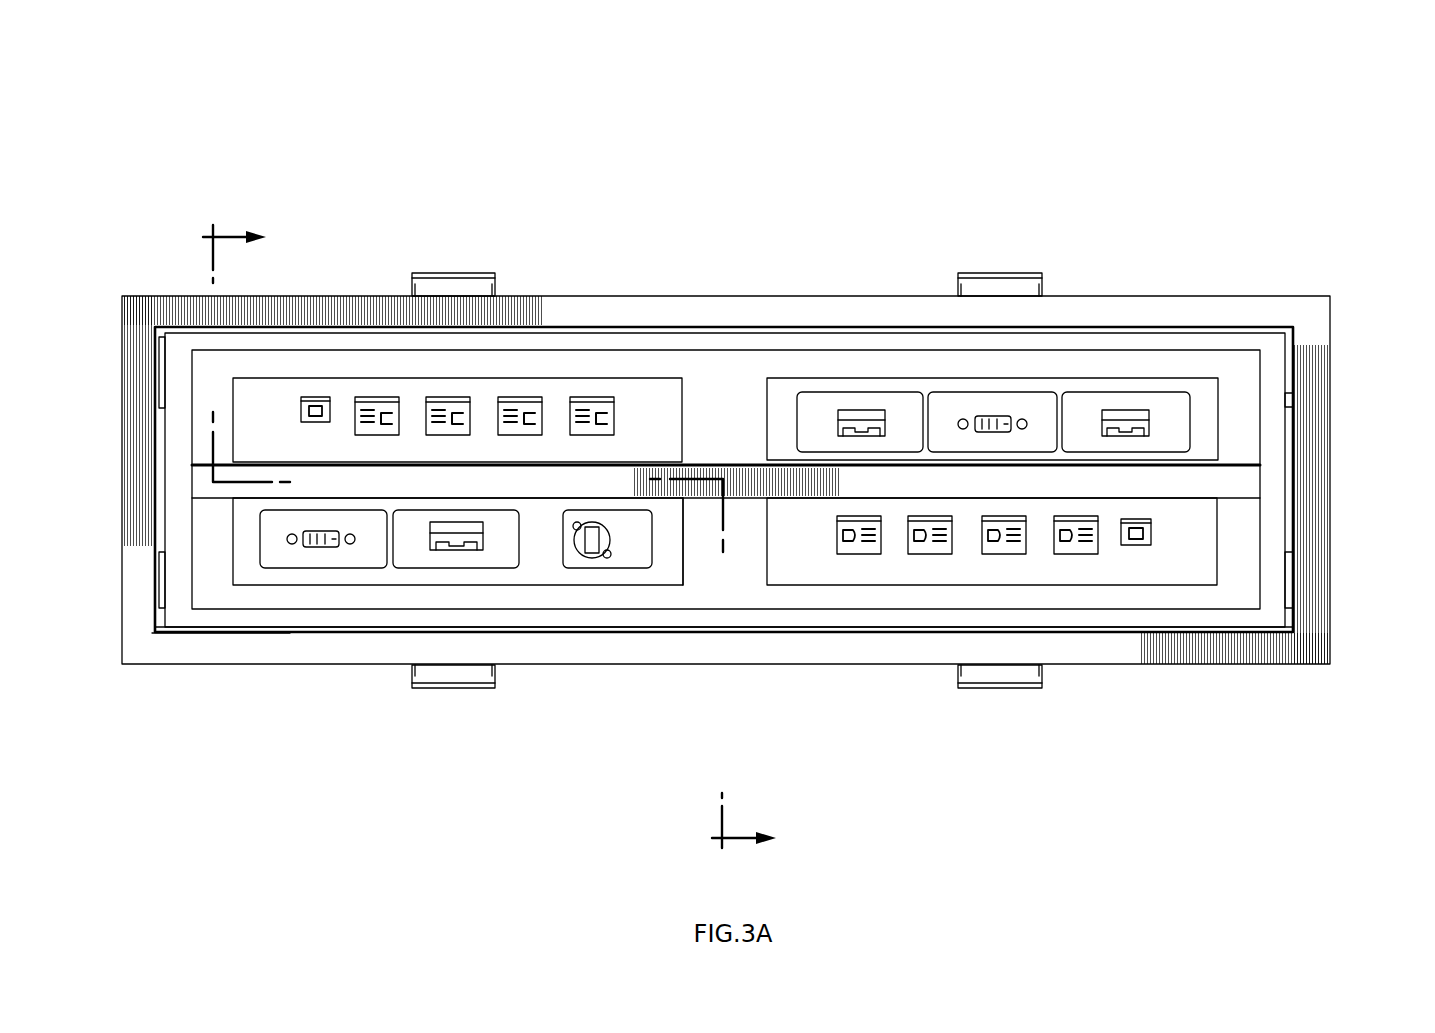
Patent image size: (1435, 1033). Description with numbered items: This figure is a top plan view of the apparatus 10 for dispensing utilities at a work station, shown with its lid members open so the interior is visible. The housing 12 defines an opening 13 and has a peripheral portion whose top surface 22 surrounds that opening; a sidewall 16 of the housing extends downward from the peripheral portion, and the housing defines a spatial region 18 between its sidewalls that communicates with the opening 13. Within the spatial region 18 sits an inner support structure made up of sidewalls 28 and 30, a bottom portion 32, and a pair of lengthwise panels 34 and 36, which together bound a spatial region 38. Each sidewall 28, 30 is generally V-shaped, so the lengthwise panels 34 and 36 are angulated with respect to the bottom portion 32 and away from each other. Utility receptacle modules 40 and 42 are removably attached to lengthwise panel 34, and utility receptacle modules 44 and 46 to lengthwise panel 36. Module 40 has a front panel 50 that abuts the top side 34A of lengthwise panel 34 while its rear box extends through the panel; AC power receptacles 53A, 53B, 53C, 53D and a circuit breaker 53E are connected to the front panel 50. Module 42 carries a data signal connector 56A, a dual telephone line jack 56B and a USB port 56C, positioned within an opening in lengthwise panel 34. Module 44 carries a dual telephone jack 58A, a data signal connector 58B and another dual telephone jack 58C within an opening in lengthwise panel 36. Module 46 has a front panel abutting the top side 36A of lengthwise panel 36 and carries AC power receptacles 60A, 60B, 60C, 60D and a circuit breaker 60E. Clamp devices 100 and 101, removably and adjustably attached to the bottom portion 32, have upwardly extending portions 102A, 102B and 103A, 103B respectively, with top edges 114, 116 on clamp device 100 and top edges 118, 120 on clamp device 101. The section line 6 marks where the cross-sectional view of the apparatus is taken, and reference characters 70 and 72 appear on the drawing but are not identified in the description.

The apparatus 10 is at (163, 176).
The housing 12 is at (690, 297).
The opening 13 is at (284, 628).
The sidewall 16 is at (1290, 525).
The spatial region 18 is at (1290, 498).
The top surface 22 is at (851, 308).
The sidewall 28 is at (1286, 426).
The sidewall 30 is at (160, 462).
The bottom portion 32 is at (203, 483).
The lengthwise panel 34 is at (728, 594).
The top side 34A is at (742, 557).
The lengthwise panel 36 is at (721, 398).
The top side 36A is at (702, 372).
The spatial region 38 is at (705, 553).
The utility receptacle module 40 is at (795, 565).
The utility receptacle module 42 is at (661, 567).
The utility receptacle module 44 is at (1146, 385).
The utility receptacle module 46 is at (375, 396).
The front panel 50 is at (1190, 570).
The utility receptacle 53A is at (866, 516).
The utility receptacle 53B is at (935, 516).
The utility receptacle 53C is at (1005, 516).
The utility receptacle 53D is at (1076, 516).
The circuit breaker 53E is at (1136, 519).
The utility receptacle 56A is at (320, 531).
The utility receptacle 56B is at (453, 522).
The utility receptacle 56C is at (590, 522).
The utility receptacle 58A is at (858, 409).
The utility receptacle 58B is at (980, 416).
The utility receptacle 58C is at (1125, 410).
The utility receptacle 60A is at (603, 397).
The utility receptacle 60B is at (523, 397).
The utility receptacle 60C is at (451, 397).
The utility receptacle 60D is at (380, 397).
The circuit breaker 60E is at (300, 409).
The frame edge 70 is at (190, 618).
The frame lip 72 is at (330, 346).
The clamp device 100 is at (495, 291).
The clamp device 101 is at (958, 292).
The upwardly extending portion 102A is at (483, 690).
The upwardly extending portion 102B is at (433, 273).
The upwardly extending portion 103A is at (980, 690).
The upwardly extending portion 103B is at (1030, 273).
The top edge 114 is at (466, 690).
The top edge 116 is at (471, 274).
The top edge 118 is at (1023, 690).
The top edge 120 is at (1004, 273).
The section line 6- 6 is at (504, 540).